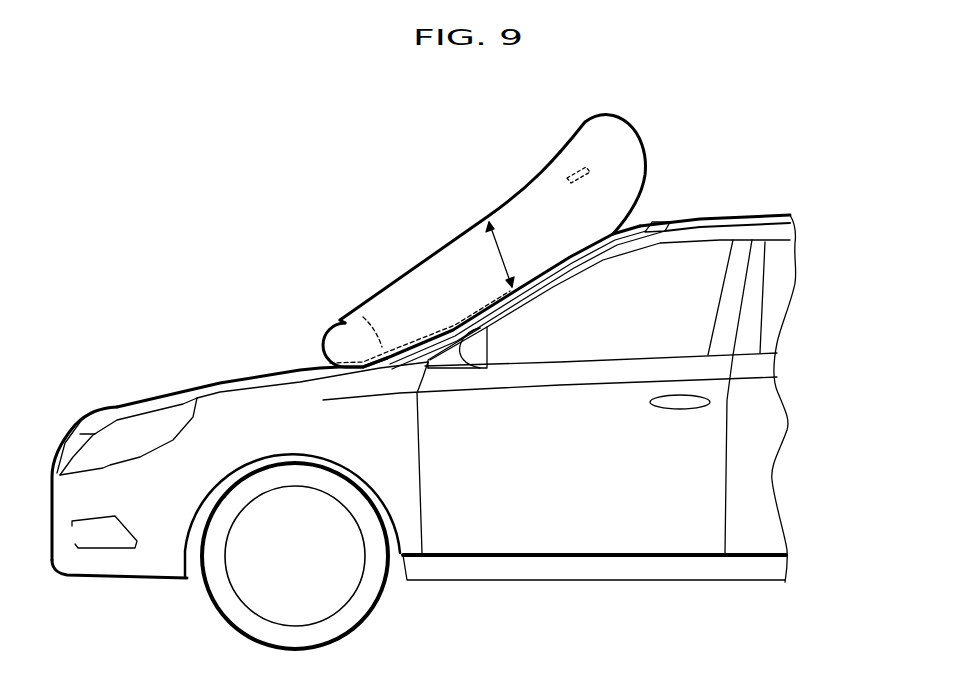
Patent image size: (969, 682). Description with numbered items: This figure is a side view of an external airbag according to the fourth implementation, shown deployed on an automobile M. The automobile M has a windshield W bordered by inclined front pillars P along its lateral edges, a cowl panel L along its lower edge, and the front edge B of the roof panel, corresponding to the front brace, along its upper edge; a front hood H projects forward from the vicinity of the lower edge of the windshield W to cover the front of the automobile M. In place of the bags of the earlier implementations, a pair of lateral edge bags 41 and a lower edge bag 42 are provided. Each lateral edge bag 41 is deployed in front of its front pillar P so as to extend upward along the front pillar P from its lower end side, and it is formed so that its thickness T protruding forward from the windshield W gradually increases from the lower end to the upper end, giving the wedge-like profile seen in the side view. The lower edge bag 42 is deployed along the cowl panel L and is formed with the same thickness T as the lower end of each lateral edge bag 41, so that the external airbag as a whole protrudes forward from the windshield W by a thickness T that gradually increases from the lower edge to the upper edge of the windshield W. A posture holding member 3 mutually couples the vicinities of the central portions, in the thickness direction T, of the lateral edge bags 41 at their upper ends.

The posture holding member 3 is at (585, 166).
The front pillar P is at (573, 232).
The lateral edge bag 41 is at (487, 214).
The cowl panel L is at (400, 340).
The lower edge bag 42 is at (382, 347).
The thickness T is at (503, 254).
The front hood H is at (216, 385).
The windshield W is at (637, 222).
The front edge of roof panel B is at (660, 222).
The automobile M is at (760, 214).